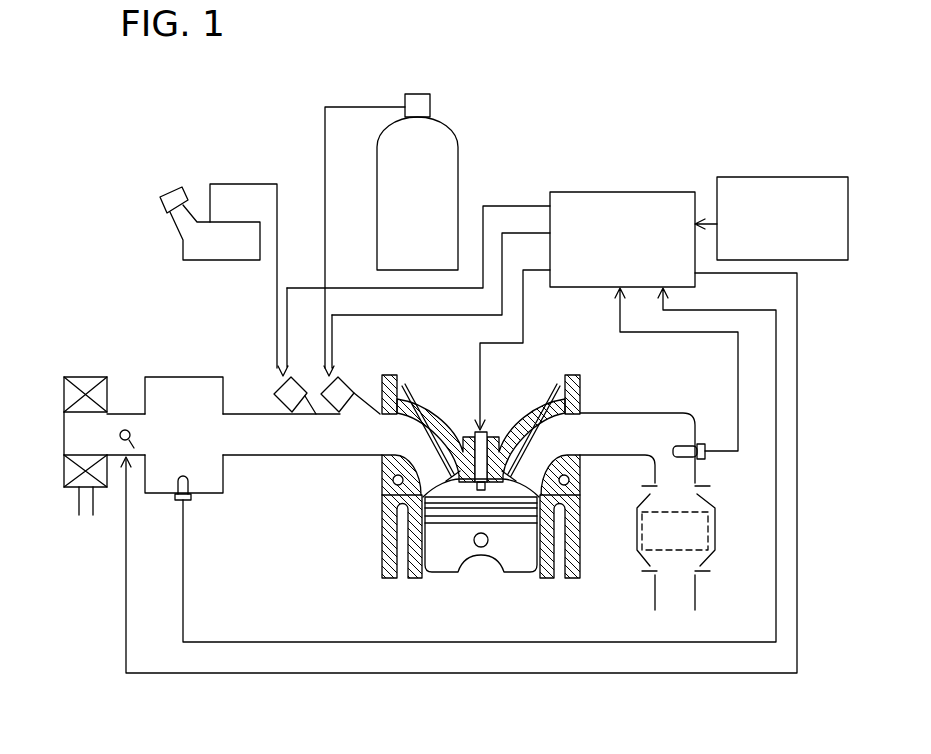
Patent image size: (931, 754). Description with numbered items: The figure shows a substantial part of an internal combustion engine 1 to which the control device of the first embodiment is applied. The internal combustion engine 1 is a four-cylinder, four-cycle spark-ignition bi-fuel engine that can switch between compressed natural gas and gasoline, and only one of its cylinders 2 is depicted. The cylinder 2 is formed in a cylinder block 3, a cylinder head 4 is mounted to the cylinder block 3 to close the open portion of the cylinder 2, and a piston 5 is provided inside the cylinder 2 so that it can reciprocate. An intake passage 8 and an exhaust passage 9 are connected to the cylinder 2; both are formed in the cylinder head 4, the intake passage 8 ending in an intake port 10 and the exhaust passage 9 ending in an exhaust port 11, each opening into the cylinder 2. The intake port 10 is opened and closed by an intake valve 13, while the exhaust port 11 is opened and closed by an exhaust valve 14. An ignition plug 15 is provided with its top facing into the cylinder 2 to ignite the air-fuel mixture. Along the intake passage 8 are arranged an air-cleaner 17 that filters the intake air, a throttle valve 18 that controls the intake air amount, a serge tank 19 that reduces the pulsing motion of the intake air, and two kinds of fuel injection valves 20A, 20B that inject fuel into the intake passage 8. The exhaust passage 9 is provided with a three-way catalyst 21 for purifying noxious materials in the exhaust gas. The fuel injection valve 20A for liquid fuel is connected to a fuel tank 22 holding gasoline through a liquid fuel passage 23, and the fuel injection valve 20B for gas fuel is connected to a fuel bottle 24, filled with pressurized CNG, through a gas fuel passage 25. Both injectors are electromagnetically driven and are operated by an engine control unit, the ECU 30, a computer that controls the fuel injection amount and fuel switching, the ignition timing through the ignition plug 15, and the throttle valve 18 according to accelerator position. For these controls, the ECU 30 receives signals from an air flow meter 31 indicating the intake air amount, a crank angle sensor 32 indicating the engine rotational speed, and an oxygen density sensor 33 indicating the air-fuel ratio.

The internal combustion engine 1 is at (543, 163).
The cylinder 2 is at (542, 569).
The cylinder block 3 is at (583, 518).
The cylinder head 4 is at (585, 382).
The piston 5 is at (440, 542).
The intake passage 8 is at (245, 413).
The exhaust passage 9 is at (657, 412).
The intake port 10 is at (383, 441).
The exhaust port 11 is at (580, 445).
The intake valve 13 is at (424, 425).
The exhaust valve 14 is at (531, 430).
The ignition plug 15 is at (383, 492).
The air-cleaner 17 is at (74, 393).
The throttle valve 18 is at (124, 429).
The serge tank 19 is at (160, 377).
The fuel injection valve 20A is at (273, 387).
The fuel injection valve 20B is at (352, 386).
The three-way catalyst 21 is at (700, 522).
The fuel tank 22 is at (183, 240).
The liquid fuel passage 23 is at (251, 184).
The fuel bottle 24 is at (456, 148).
The gas fuel passage 25 is at (354, 107).
The engine control unit (ECU) 30 is at (586, 192).
The air flow meter 31 is at (191, 499).
The crank angle sensor 32 is at (774, 177).
The oxygen density sensor 33 is at (699, 444).